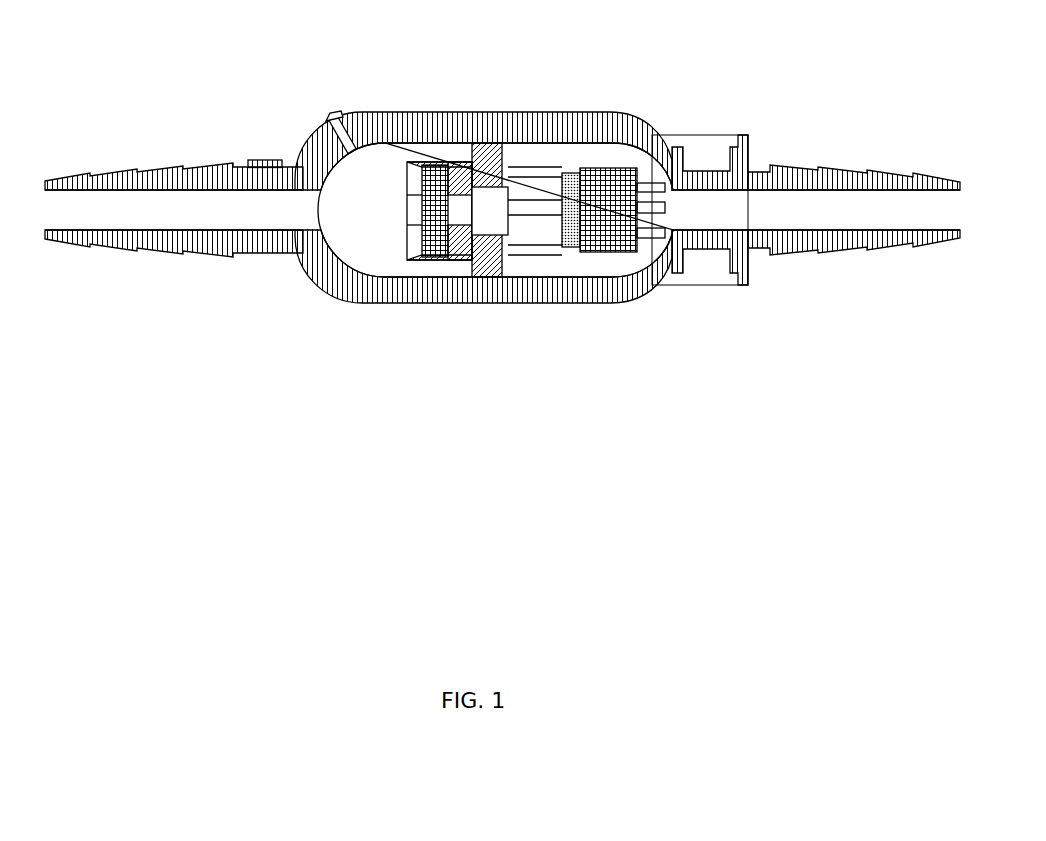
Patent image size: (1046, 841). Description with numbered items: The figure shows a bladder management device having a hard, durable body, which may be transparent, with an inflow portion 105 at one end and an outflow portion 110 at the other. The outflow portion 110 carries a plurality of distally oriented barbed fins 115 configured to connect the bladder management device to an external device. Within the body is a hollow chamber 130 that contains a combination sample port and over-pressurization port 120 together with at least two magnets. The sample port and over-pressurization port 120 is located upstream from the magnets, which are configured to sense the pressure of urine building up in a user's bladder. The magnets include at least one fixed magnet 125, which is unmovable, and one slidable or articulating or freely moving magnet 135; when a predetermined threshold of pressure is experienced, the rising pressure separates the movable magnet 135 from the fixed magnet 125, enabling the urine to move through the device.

The inflow portion 105 is at (950, 240).
The outflow portion 110 is at (240, 246).
The distally oriented barbed fins 115 is at (848, 268).
The combination sample port and over-pressurization port 120 is at (272, 144).
The fixed magnet 125 is at (518, 270).
The hollow chamber 130 is at (391, 221).
The slidable or articulating or freely moving magnet 135 is at (597, 265).